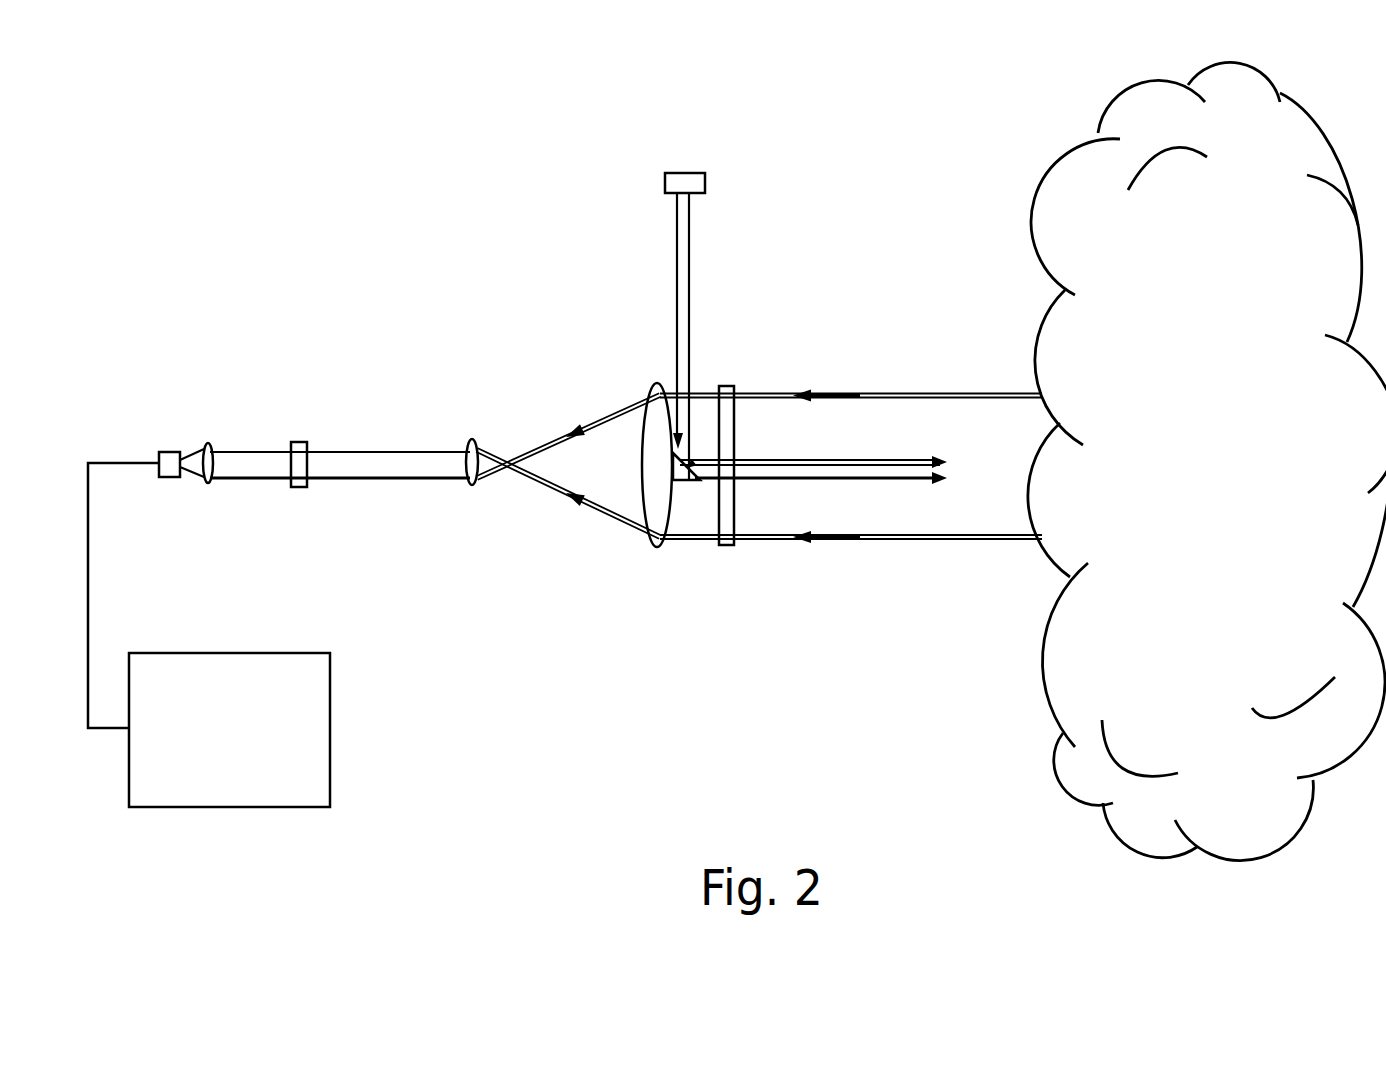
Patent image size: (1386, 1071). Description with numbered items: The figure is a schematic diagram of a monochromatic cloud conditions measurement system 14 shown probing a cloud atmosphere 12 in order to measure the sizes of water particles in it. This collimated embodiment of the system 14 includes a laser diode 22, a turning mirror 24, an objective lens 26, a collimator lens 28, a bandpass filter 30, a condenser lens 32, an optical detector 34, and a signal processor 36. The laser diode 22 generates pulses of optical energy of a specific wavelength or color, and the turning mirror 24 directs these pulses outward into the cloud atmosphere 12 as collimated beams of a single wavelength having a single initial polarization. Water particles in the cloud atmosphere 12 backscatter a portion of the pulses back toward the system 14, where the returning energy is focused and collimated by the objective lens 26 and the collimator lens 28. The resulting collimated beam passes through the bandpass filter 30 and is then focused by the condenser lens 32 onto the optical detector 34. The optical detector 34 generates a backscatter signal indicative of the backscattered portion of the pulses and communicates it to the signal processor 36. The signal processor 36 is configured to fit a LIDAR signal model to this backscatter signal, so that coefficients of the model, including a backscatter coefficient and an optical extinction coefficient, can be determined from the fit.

The cloud atmosphere 12 is at (1227, 387).
The cloud conditions measurement system 14 is at (340, 292).
The laser diode 22 is at (686, 173).
The turning mirror 24 is at (683, 482).
The objective lens 26 is at (643, 493).
The collimator lens 28 is at (477, 470).
The bandpass filter 30 is at (298, 487).
The condenser lens 32 is at (198, 471).
The optical detector 34 is at (168, 451).
The signal processor 36 is at (214, 784).